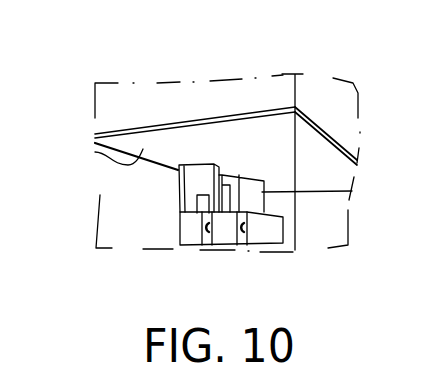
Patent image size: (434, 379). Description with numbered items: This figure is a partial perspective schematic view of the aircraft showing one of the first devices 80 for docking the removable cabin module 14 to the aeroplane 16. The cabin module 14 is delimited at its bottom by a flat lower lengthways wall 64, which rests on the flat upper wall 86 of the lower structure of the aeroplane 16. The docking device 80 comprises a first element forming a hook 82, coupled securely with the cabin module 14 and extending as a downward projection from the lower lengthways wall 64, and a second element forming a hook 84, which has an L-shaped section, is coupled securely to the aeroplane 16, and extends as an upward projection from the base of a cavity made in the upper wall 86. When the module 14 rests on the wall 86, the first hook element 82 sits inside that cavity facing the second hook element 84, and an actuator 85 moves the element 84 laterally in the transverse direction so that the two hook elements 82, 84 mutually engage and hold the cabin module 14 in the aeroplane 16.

The removable cabin module 14 is at (153, 101).
The aeroplane 16 is at (141, 227).
The flat lower lengthways wall 64 is at (95, 152).
The first devices for docking 80 is at (202, 231).
The first element forming a hook 82 is at (200, 181).
The second element forming a hook 84 is at (258, 201).
The actuator 85 is at (158, 197).
The flat upper wall 86 is at (335, 213).